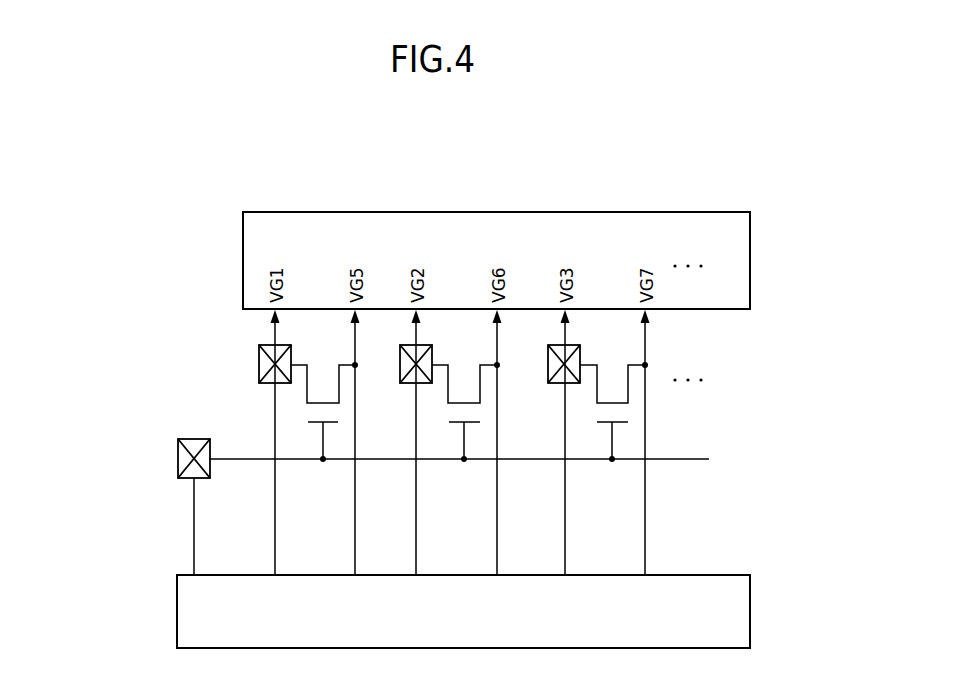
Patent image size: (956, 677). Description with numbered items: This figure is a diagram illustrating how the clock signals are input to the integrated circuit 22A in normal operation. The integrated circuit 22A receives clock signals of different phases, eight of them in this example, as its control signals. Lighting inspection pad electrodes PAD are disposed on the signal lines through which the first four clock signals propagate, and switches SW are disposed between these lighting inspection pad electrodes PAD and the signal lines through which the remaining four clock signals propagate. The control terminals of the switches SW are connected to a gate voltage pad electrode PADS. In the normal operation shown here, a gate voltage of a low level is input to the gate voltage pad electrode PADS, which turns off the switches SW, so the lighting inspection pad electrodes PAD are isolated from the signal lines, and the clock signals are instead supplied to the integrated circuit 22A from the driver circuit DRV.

The integrated circuit 22A is at (731, 206).
The driver circuit DRV is at (732, 567).
The lighting inspection pad electrode PAD is at (250, 364).
The switch SW is at (292, 407).
The gate voltage pad electrode PADS is at (168, 461).